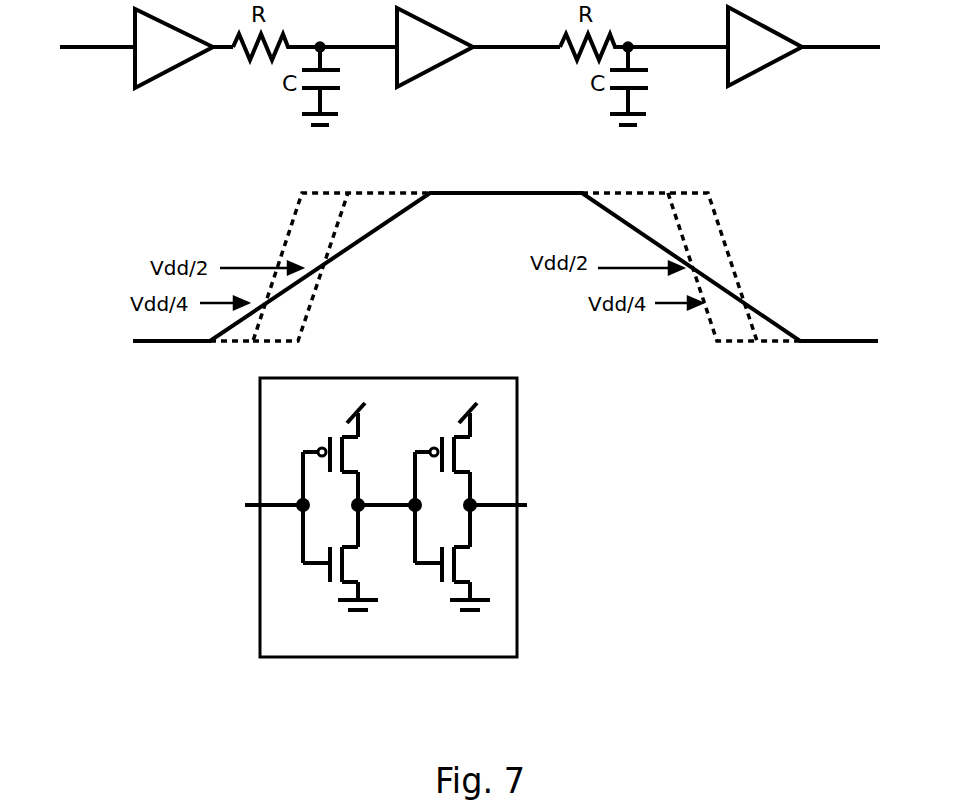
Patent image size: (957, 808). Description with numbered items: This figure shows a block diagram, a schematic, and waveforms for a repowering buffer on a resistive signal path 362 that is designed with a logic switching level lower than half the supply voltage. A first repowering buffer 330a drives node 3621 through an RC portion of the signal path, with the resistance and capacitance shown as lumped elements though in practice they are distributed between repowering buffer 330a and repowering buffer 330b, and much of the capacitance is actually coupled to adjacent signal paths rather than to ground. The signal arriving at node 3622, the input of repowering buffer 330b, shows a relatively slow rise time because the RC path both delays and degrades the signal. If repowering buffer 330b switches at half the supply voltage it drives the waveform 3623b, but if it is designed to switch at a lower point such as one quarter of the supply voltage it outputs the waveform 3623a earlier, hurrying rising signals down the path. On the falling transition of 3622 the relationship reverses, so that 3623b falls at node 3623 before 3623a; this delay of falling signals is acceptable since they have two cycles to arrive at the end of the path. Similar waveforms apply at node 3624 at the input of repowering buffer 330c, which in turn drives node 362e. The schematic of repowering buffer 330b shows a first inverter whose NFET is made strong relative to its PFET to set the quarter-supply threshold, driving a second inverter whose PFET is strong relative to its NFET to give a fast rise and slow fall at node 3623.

The signal path 362 is at (104, 44).
The node 3621 is at (227, 45).
The node 3622 is at (346, 45).
The node 3623 is at (489, 45).
The output waveform with Vdd/4 switching threshold 3623a is at (747, 197).
The output waveform with Vdd/2 switching threshold 3623b is at (340, 220).
The node 3624 is at (648, 44).
The node 362e is at (830, 45).
The repowering buffer 330a is at (174, 48).
The repowering buffer 330b is at (497, 648).
The repowering buffer 330c is at (765, 46).